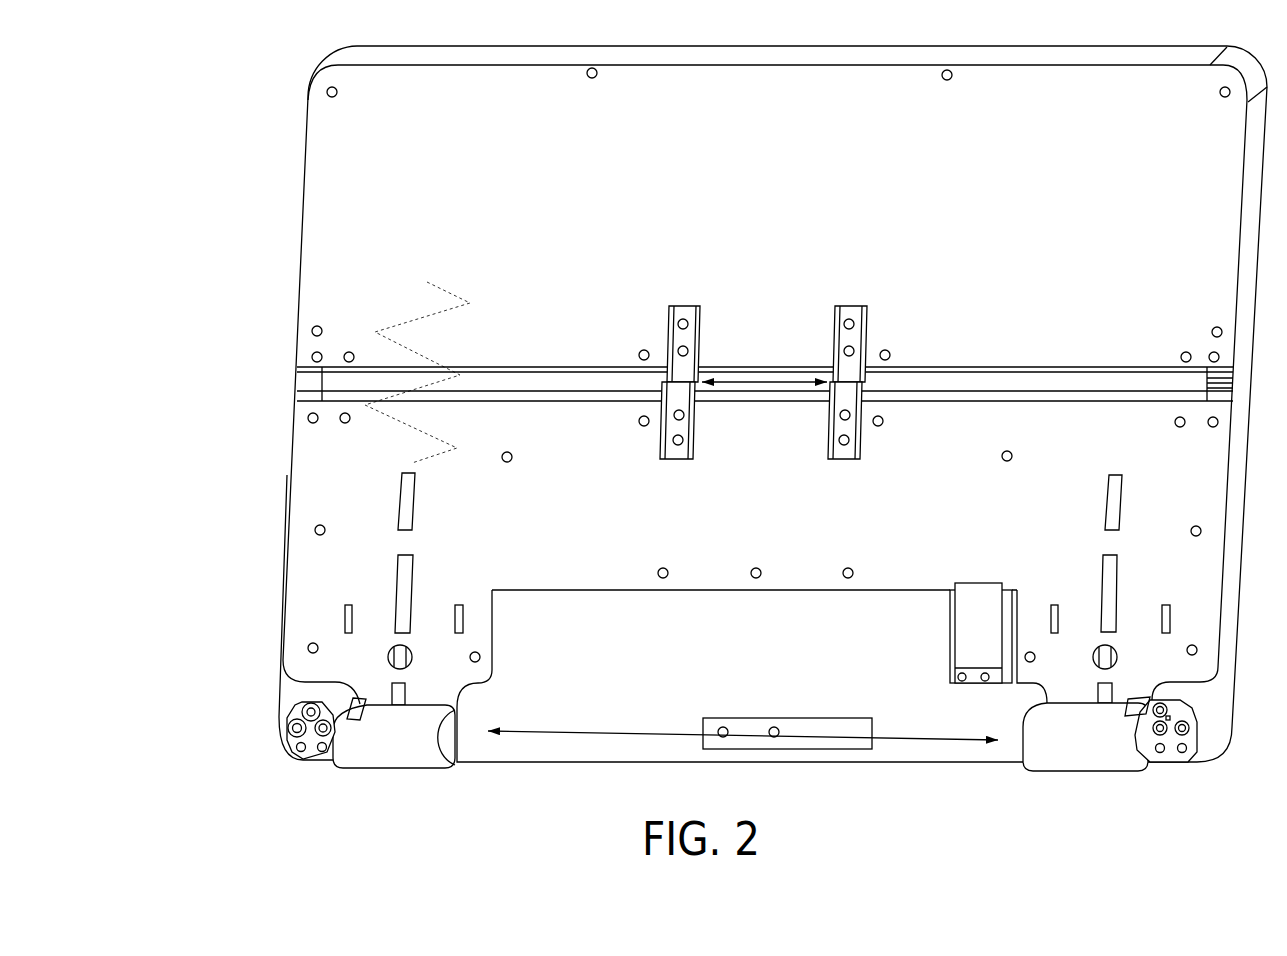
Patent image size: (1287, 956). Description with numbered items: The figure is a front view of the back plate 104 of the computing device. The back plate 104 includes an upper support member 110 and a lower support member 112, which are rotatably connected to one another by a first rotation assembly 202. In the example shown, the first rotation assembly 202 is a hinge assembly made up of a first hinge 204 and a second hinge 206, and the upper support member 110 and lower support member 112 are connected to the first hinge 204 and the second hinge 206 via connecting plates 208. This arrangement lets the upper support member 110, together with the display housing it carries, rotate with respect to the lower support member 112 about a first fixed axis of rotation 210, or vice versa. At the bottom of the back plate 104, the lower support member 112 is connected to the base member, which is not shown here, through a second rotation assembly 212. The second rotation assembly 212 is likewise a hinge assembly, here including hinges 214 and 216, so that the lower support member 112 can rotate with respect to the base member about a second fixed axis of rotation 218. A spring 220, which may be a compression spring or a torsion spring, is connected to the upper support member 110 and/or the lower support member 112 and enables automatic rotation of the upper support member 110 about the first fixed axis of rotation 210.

The back plate 104 is at (272, 81).
The upper support member 110 is at (306, 172).
The lower support member 112 is at (287, 475).
The first rotation assembly 202 is at (760, 351).
The first hinge 204 is at (538, 367).
The second hinge 206 is at (1037, 367).
The connecting plates 208 is at (829, 332).
The first fixed axis of rotation 210 is at (800, 380).
The second rotation assembly 212 is at (434, 702).
The hinge 214 is at (376, 701).
The hinge 216 is at (1121, 711).
The second fixed axis of rotation 218 is at (938, 740).
The spring 220 is at (412, 302).